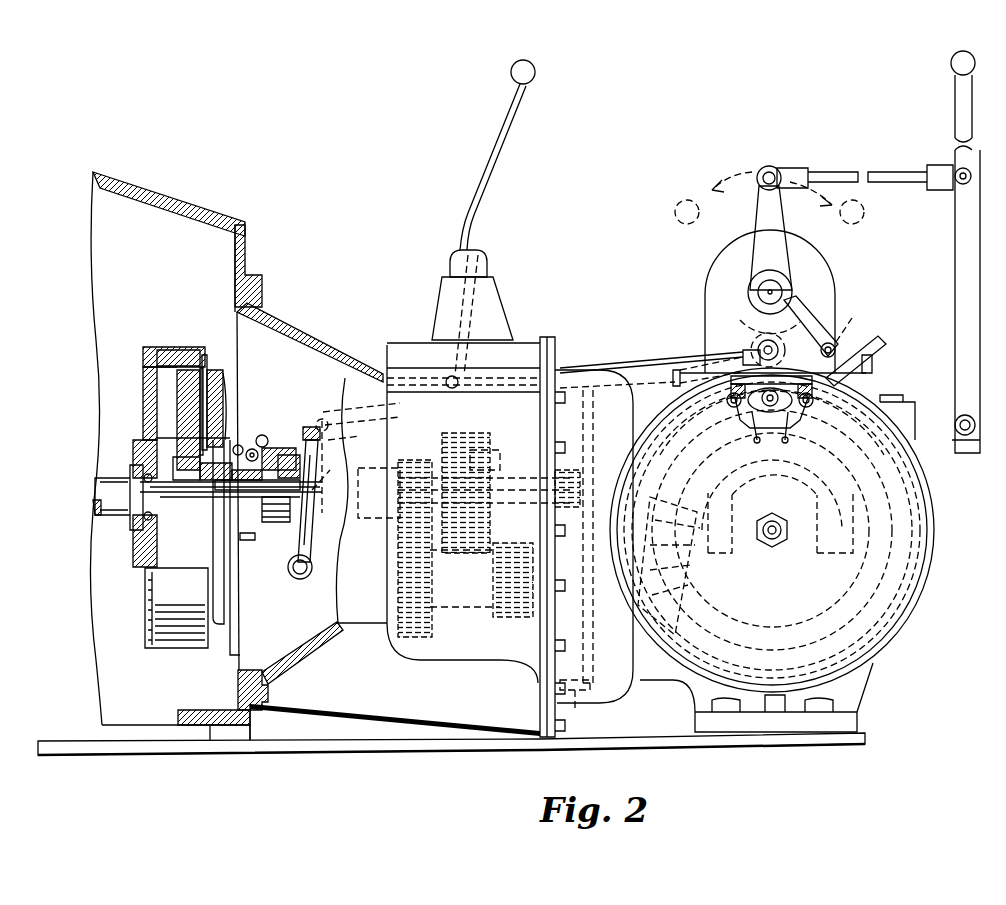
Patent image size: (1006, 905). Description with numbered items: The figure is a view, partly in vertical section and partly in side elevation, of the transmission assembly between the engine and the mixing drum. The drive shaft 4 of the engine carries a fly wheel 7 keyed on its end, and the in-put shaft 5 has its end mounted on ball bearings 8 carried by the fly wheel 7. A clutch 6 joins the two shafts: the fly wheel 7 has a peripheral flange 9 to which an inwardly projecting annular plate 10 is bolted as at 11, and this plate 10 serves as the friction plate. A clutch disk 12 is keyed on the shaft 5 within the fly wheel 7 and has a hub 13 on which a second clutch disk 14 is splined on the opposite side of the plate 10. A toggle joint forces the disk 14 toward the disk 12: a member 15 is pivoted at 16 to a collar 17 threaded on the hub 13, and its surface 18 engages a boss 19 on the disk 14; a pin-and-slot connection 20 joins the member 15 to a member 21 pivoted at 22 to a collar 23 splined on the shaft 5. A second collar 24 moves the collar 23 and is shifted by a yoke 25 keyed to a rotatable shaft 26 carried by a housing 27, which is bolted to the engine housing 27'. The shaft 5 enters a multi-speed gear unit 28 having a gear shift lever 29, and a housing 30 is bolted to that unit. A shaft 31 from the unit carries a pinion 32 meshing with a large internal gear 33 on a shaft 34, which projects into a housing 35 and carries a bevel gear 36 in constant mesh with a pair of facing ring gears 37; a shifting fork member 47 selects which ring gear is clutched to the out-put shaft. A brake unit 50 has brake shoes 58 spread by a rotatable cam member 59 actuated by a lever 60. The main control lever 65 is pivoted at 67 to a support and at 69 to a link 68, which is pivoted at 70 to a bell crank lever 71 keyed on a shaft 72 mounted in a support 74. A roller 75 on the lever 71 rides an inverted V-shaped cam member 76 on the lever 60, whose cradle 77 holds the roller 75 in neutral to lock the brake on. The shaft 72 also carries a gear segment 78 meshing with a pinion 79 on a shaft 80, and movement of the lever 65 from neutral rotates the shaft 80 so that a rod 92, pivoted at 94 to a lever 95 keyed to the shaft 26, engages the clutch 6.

The drive shaft 4 is at (107, 490).
The input shaft 5 is at (335, 480).
The clutch 6 is at (143, 352).
The fly wheel 7 is at (143, 375).
The ball bearings 8 is at (138, 477).
The peripheral flange 9 is at (190, 347).
The annular plate 10 is at (215, 376).
The bolted connection 11 is at (208, 362).
The clutch disk 12 is at (185, 393).
The hub 13 is at (205, 495).
The clutch disk 14 is at (225, 390).
The member 15 is at (252, 449).
The pivot 16 is at (242, 462).
The collar 17 is at (250, 478).
The surface 18 is at (238, 445).
The boss 19 is at (191, 453).
The pin-and-slot connection 20 is at (264, 437).
The member 21 is at (275, 452).
The pivot 22 is at (292, 456).
The collar 23 is at (275, 522).
The second collar 24 is at (311, 427).
The yoke 25 is at (312, 540).
The rotatable shaft 26 is at (303, 575).
The housing 27 is at (282, 673).
The engine housing 27' is at (189, 456).
The multi-speed gear unit 28 is at (420, 637).
The gear shift lever 29 is at (475, 215).
The housing 30 is at (565, 362).
The shaft 31 is at (508, 490).
The pinion 32 is at (580, 480).
The internal gear 33 is at (581, 704).
The shaft 34 is at (592, 560).
The housing 35 is at (655, 390).
The bevel gear 36 is at (772, 530).
The ring gears 37 is at (720, 602).
The shifting fork member 47 is at (800, 482).
The brake unit 50 is at (934, 520).
The brake shoes 58 is at (745, 415).
The cam member 59 is at (770, 425).
The lever 60 is at (880, 352).
The main control lever 65 is at (955, 215).
The pivot 67 is at (955, 425).
The link 68 is at (878, 172).
The pivot 69 is at (958, 170).
The pivot 70 is at (772, 170).
The bell crank lever 71 is at (758, 214).
The shaft 72 is at (780, 295).
The support 74 is at (730, 262).
The roller 75 is at (823, 350).
The cam member 76 is at (843, 350).
The cradle 77 is at (850, 319).
The gear segment 78 is at (742, 316).
The pinion 79 is at (752, 344).
The shaft 80 is at (735, 352).
The rod 92 is at (628, 365).
The pivot 94 is at (330, 420).
The lever 95 is at (349, 437).